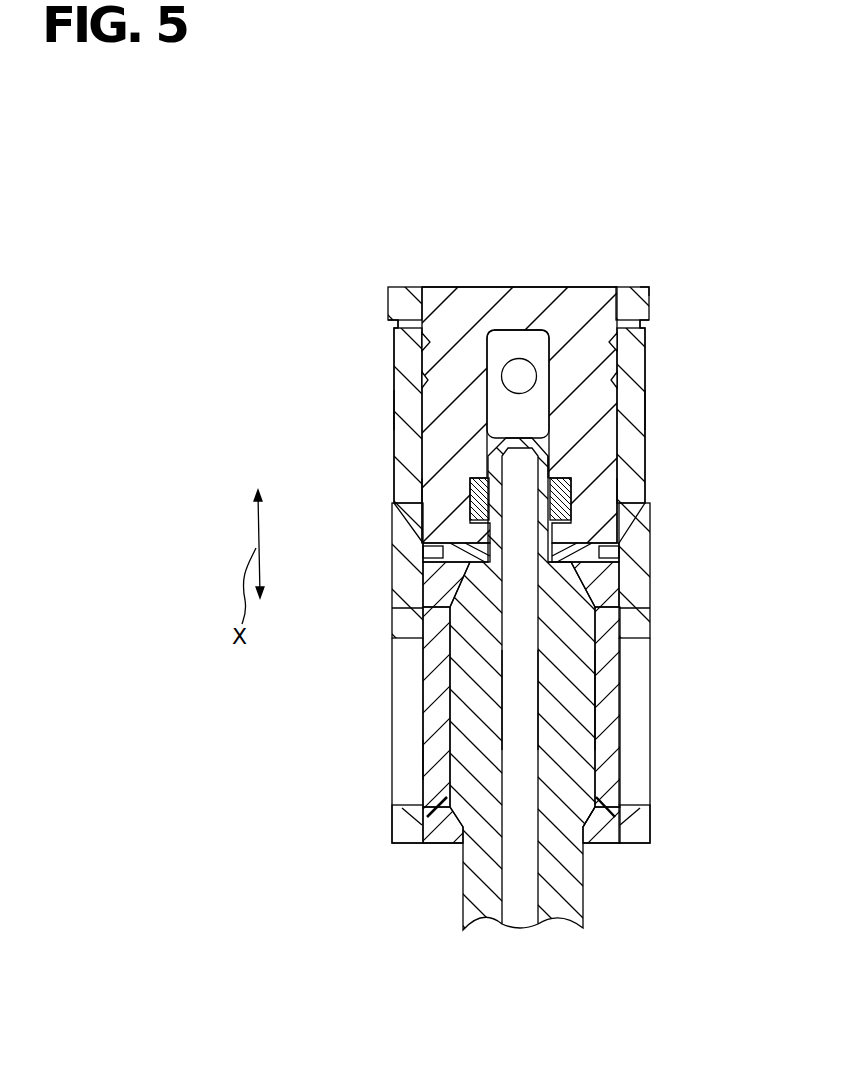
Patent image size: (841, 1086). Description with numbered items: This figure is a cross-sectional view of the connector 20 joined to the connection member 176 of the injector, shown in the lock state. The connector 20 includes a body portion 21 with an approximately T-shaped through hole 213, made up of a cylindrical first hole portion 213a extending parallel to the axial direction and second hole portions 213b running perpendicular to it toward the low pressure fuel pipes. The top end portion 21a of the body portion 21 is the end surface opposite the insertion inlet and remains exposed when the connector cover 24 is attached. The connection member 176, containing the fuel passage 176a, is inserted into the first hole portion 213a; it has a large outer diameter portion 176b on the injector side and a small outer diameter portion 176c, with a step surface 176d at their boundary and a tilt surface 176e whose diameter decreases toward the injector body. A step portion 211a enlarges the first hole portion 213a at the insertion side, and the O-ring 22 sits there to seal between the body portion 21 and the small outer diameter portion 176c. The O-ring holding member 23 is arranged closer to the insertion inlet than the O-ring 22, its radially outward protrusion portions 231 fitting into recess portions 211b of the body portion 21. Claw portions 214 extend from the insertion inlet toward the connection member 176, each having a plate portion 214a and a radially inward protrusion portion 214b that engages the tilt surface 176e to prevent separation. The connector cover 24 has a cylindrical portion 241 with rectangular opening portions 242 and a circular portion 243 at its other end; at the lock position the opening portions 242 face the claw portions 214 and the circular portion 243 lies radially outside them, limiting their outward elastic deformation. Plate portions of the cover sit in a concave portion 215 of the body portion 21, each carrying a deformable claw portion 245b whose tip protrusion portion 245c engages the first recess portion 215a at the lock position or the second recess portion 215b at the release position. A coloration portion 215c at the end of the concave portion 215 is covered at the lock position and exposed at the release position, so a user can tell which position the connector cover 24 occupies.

The connector 20 is at (408, 262).
The body portion 21 is at (604, 288).
The top end portion 21a is at (580, 287).
The O-ring 22 is at (470, 482).
The O-ring holding member 23 is at (467, 568).
The connector cover 24 is at (393, 633).
The connection member 176 is at (586, 896).
The fuel passage 176a is at (525, 773).
The large outer diameter portion 176b is at (578, 692).
The small outer diameter portion 176c is at (558, 468).
The step surface 176d is at (575, 552).
The tilt surface 176e is at (594, 816).
The step portion 211a is at (590, 511).
The recess portions 211b is at (425, 560).
The through hole 213 is at (582, 200).
The first hole portion 213a is at (503, 412).
The second hole portions 213b is at (519, 373).
The claw portions 214 is at (428, 707).
The plate portion 214a is at (435, 746).
The protrusion portion 214b is at (428, 805).
The concave portion 215 is at (390, 297).
The first recess portion 215a is at (415, 331).
The second recess portion 215b is at (410, 382).
The coloration portion 215c is at (649, 287).
The protrusion portions 231 is at (432, 540).
The cylindrical portion 241 is at (638, 612).
The opening portions 242 is at (402, 684).
The circular portion 243 is at (402, 826).
The claw portion 245b is at (412, 431).
The protrusion portion 245c is at (428, 342).